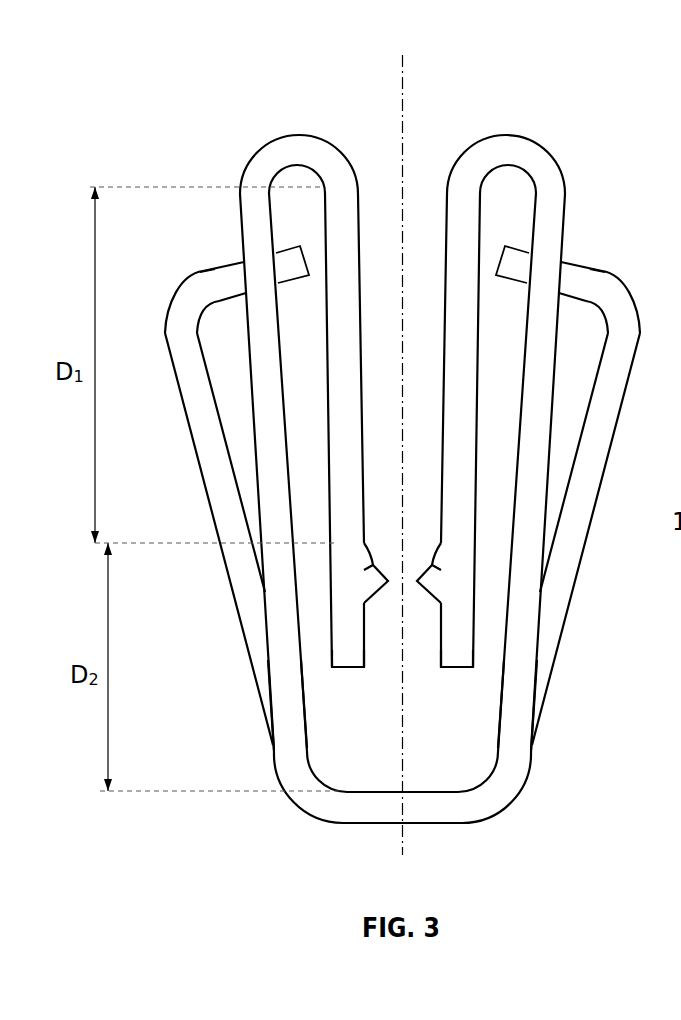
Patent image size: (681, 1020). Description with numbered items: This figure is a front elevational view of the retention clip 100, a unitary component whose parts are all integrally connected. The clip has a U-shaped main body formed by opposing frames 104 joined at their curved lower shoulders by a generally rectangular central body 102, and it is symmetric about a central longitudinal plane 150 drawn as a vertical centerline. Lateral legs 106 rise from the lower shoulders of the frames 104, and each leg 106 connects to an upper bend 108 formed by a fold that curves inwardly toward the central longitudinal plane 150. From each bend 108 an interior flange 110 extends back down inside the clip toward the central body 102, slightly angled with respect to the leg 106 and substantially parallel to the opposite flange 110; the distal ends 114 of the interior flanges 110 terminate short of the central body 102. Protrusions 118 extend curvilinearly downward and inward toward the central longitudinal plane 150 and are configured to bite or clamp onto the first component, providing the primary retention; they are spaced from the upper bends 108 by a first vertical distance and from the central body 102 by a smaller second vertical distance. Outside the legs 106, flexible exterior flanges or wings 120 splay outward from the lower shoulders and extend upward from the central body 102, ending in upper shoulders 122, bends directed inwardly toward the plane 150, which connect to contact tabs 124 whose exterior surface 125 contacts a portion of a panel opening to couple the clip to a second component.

The retention clip 100 is at (278, 50).
The central body 102 is at (425, 810).
The frames 104 is at (298, 732).
The lateral legs 106 is at (257, 485).
The upper bend 108 is at (298, 146).
The interior flanges 110 is at (342, 312).
The distal ends 114 is at (338, 655).
The protrusions 118 is at (372, 582).
The flexible exterior flanges or wings 120 is at (184, 423).
The upper shoulders 122 is at (175, 297).
The contact tabs 124 is at (233, 270).
The exterior surface 125 is at (207, 270).
The central longitudinal plane 150 is at (404, 441).